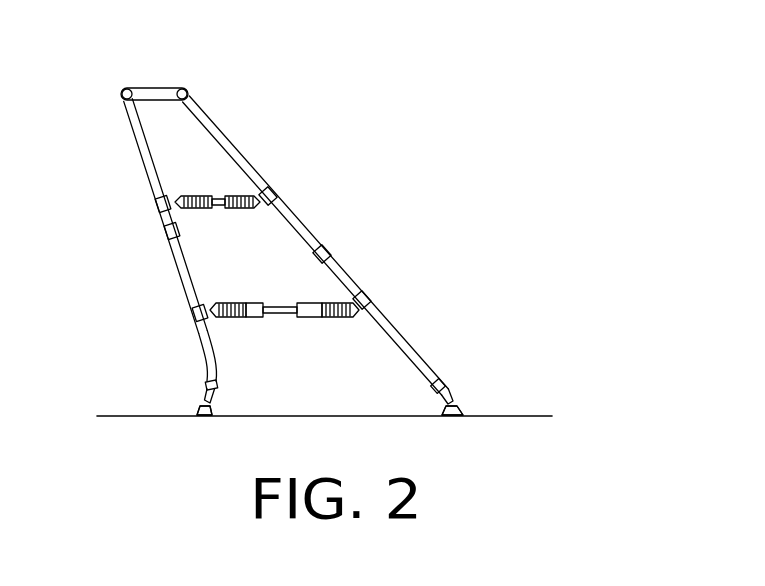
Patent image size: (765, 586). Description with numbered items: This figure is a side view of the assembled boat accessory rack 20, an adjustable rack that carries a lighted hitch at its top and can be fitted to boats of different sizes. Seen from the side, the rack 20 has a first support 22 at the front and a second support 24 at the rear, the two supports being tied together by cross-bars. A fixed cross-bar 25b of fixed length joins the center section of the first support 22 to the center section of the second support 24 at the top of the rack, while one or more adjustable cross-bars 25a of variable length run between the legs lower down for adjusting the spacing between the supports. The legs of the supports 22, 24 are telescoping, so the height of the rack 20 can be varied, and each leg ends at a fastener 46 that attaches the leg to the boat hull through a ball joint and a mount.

The boat accessory rack 20 is at (360, 241).
The first support 22 is at (252, 160).
The second support 24 is at (147, 178).
The adjustable cross-bar 25a is at (283, 321).
The fixed cross-bar 25b is at (157, 88).
The fastener 46 is at (199, 417).